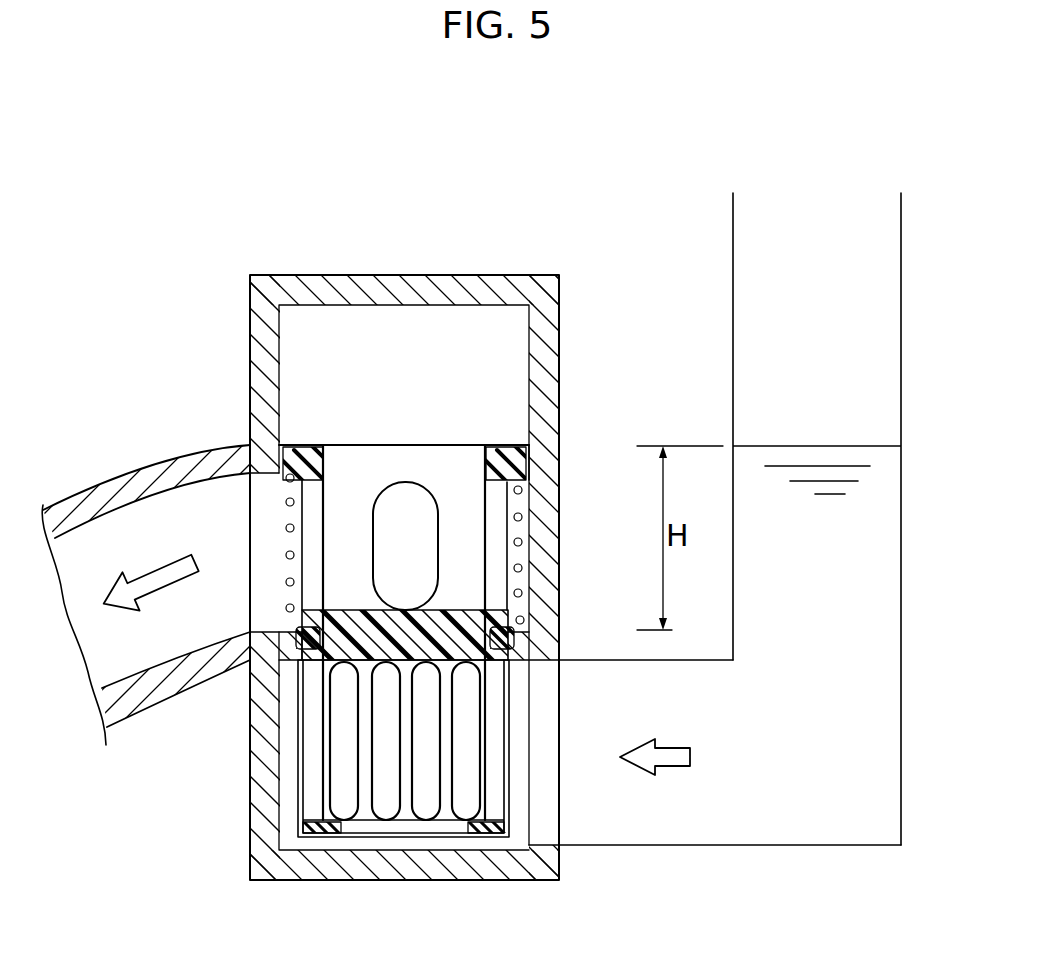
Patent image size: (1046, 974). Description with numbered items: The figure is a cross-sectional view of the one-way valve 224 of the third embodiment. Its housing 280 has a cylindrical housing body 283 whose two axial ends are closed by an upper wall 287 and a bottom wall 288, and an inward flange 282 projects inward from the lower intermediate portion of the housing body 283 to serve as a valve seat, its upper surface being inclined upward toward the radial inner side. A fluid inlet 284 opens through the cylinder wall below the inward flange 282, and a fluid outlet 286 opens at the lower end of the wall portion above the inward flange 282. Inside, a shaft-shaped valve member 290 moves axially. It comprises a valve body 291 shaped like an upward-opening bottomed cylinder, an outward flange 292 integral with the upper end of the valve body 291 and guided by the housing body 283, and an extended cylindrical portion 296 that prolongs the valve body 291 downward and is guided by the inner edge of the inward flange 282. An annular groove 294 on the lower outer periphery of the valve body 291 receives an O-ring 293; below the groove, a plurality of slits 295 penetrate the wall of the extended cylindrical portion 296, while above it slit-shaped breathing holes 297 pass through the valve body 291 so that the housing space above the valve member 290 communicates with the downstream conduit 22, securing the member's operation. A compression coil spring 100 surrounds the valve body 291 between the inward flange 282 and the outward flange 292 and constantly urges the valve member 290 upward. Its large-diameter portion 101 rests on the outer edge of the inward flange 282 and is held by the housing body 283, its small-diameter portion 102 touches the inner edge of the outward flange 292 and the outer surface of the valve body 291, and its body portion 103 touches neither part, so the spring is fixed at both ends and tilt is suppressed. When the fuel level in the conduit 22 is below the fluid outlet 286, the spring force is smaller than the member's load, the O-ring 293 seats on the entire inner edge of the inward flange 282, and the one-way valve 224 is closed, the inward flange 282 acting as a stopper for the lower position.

The downstream conduit 22 is at (901, 404).
The compression coil spring 100 is at (545, 541).
The large-diameter portion 101 is at (530, 625).
The small-diameter portion 102 is at (538, 478).
The body portion 103 is at (535, 565).
The one-way valve 224 is at (452, 178).
The housing 280 is at (444, 270).
The inward flange 282 is at (295, 650).
The housing body 283 is at (266, 352).
The fluid inlet 284 is at (537, 843).
The fluid outlet 286 is at (267, 632).
The upper wall 287 is at (342, 287).
The bottom wall 288 is at (457, 880).
The valve member 290 is at (399, 440).
The valve body 291 is at (483, 447).
The outward flange 292 is at (293, 447).
The O-ring 293 is at (535, 642).
The annular groove 294 is at (520, 648).
The slits 295 is at (373, 763).
The extended cylindrical portion 296 is at (313, 774).
The breathing holes 297 is at (340, 527).